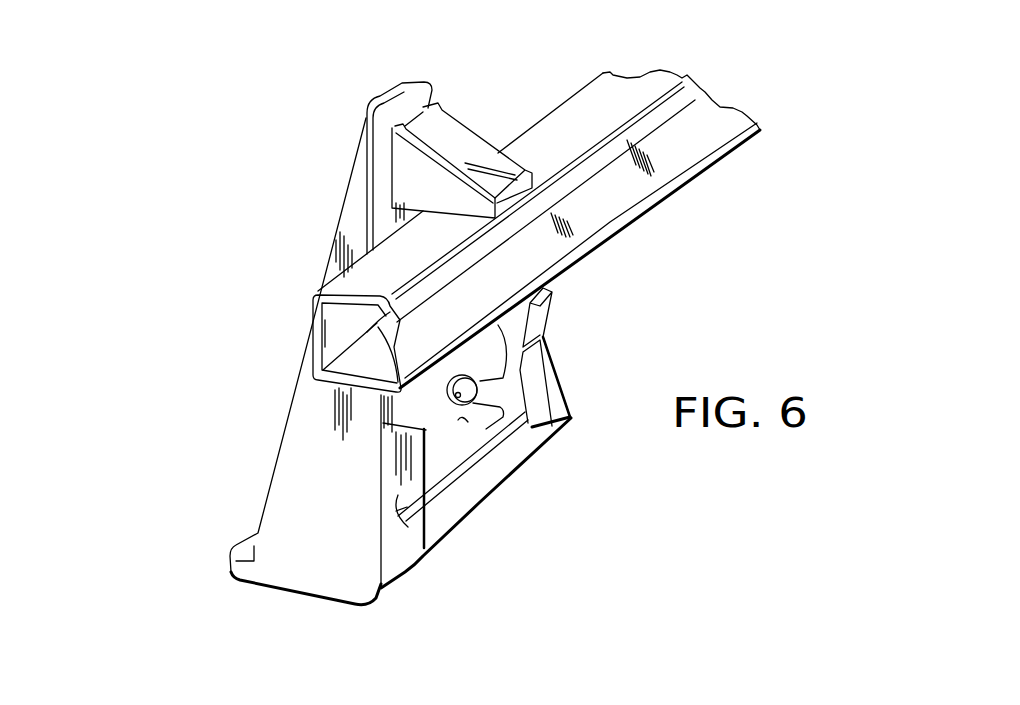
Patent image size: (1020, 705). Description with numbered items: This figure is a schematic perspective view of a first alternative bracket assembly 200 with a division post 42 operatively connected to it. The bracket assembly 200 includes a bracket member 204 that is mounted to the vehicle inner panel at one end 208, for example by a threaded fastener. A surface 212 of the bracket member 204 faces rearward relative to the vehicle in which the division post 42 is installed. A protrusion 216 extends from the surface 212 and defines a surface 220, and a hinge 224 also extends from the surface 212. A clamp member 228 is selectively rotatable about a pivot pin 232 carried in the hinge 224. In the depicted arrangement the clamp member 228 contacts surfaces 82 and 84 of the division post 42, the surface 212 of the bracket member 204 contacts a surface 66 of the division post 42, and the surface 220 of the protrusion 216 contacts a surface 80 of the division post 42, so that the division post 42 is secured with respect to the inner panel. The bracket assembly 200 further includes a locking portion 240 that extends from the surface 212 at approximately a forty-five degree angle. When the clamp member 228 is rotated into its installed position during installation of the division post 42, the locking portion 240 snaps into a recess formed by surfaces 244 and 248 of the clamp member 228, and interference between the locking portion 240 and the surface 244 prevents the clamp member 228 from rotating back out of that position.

The bracket assembly 200 is at (203, 140).
The division post 42 is at (580, 91).
The surface 80 is at (533, 123).
The surface 84 is at (635, 212).
The protrusion 216 is at (430, 185).
The surface 220 is at (397, 217).
The surface 66 is at (343, 330).
The surface 82 is at (365, 405).
The bracket member 204 is at (280, 443).
The end 208 is at (302, 593).
The surface 212 is at (417, 545).
The clamp member 228 is at (548, 380).
The surface 244 is at (476, 432).
The surface 248 is at (485, 448).
The hinge 224 is at (433, 407).
The pivot pin 232 is at (463, 423).
The locking portion 240 is at (433, 510).